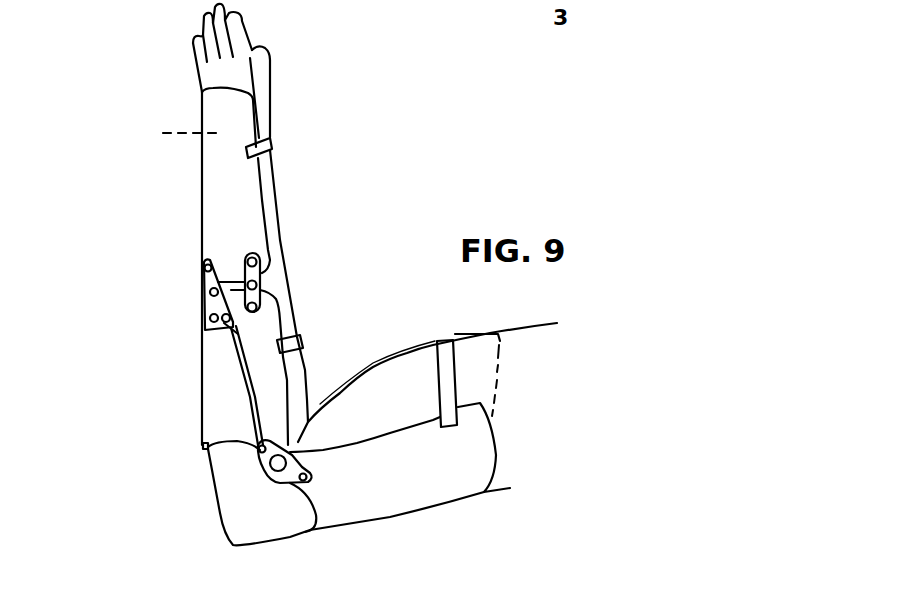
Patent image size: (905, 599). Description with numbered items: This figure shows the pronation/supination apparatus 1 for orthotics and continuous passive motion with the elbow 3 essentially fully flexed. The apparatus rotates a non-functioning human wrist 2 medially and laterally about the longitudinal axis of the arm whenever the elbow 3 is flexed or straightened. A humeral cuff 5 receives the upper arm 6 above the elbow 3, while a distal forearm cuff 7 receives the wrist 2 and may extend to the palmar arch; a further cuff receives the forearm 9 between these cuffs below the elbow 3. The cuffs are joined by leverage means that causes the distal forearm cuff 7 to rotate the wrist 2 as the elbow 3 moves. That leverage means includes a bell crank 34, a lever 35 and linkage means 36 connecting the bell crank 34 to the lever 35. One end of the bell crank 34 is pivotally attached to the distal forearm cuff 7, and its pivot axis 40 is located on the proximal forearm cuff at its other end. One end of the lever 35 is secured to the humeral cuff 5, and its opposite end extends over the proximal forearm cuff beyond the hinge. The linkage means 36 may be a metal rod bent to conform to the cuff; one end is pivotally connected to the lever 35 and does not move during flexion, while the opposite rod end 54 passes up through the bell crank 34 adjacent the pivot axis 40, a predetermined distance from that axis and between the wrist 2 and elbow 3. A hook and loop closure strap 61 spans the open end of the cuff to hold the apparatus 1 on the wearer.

The pronation/supination apparatus 1 is at (167, 458).
The wrist 2 is at (185, 124).
The elbow 3 is at (241, 549).
The humeral cuff 5 is at (416, 501).
The upper arm 6 is at (397, 377).
The distal forearm cuff 7 is at (214, 190).
The forearm 9 is at (272, 192).
The bell crank 34 is at (203, 283).
The lever 35 is at (278, 481).
The linkage means 36 is at (236, 333).
The pivot axis 40 is at (197, 318).
The rod end 54 is at (216, 332).
The hook and loop closure strap 61 is at (448, 368).